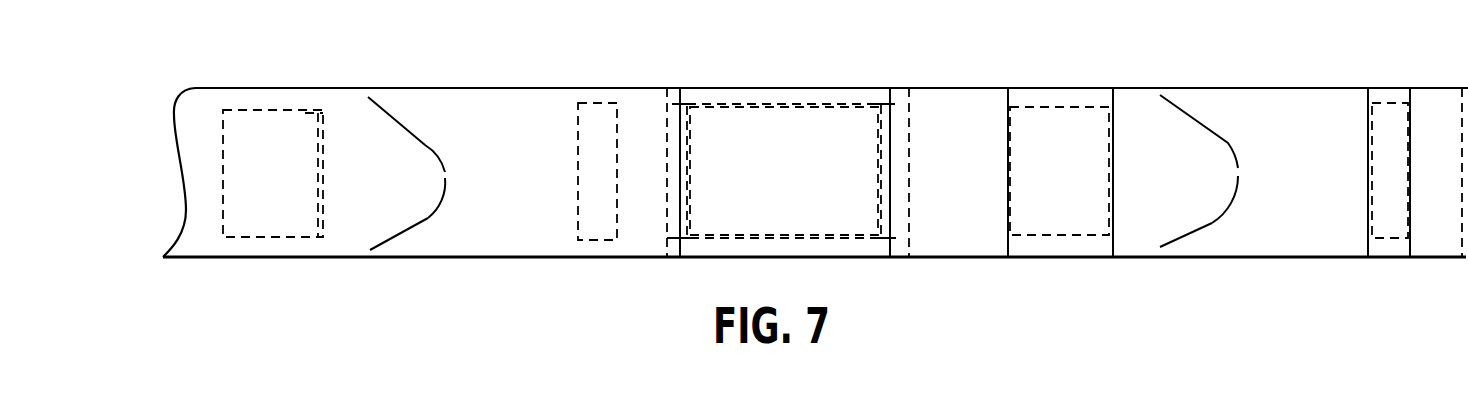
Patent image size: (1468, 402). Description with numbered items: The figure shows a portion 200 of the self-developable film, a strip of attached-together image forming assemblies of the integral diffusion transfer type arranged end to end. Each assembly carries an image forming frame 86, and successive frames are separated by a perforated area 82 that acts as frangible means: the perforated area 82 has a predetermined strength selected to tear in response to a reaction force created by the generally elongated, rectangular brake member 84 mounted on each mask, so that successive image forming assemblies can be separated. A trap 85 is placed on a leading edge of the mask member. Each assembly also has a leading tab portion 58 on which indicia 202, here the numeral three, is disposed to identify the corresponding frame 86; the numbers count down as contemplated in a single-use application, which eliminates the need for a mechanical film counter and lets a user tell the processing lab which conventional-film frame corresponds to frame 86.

The portion of self-developable film 200 is at (603, 68).
The brake member 84 is at (265, 118).
The perforated area 82 is at (397, 110).
The leading tab portion 58 is at (400, 222).
The trap 85 is at (577, 115).
The image forming frame 86 is at (800, 178).
The indicia 202 is at (1208, 165).